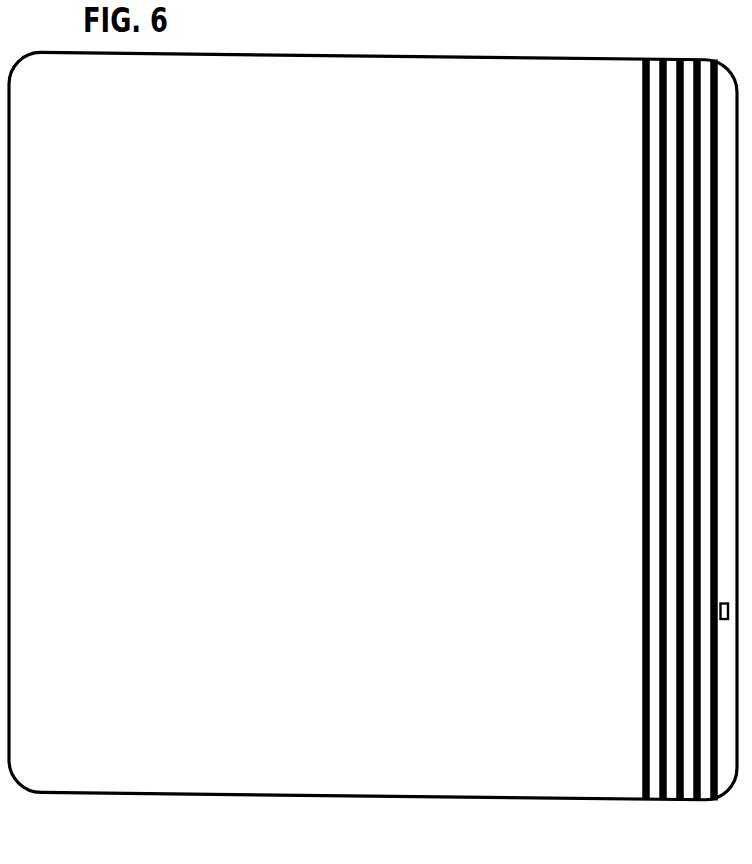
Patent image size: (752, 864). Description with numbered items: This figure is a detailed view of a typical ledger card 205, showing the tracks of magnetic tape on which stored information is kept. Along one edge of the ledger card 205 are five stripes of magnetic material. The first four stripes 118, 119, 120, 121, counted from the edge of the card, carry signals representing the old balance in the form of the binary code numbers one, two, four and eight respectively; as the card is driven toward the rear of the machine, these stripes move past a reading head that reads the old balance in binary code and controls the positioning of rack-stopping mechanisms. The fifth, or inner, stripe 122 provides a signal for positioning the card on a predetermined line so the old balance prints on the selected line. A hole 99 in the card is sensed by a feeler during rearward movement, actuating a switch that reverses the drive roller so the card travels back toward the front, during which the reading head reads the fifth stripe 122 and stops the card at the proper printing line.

The ledger card 205 is at (455, 796).
The magnetic stripe 118 is at (712, 238).
The magnetic stripe 119 is at (697, 325).
The magnetic stripe 120 is at (679, 396).
The magnetic stripe 121 is at (661, 447).
The fifth magnetic stripe 122 is at (643, 517).
The hole 99 is at (720, 611).